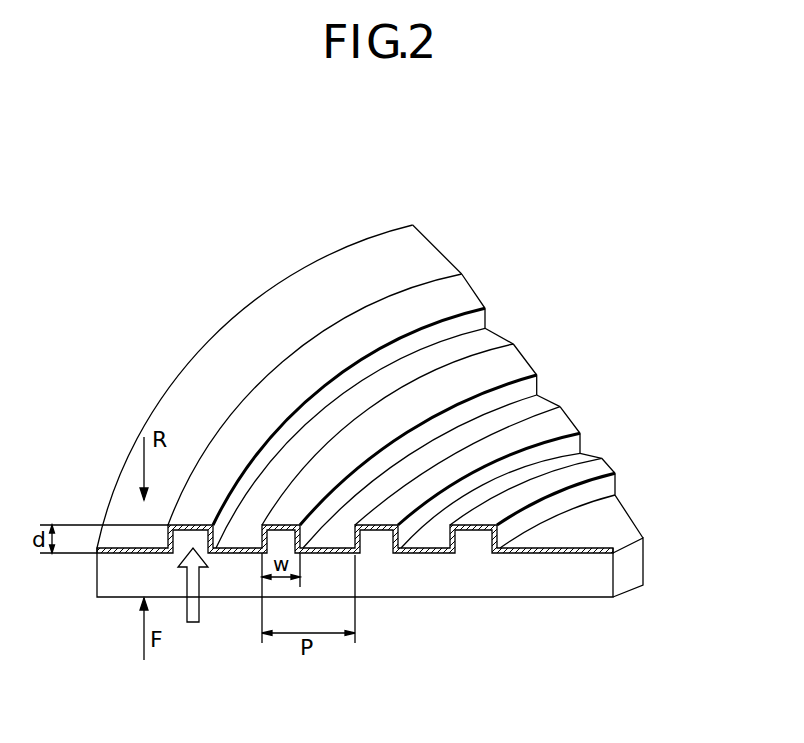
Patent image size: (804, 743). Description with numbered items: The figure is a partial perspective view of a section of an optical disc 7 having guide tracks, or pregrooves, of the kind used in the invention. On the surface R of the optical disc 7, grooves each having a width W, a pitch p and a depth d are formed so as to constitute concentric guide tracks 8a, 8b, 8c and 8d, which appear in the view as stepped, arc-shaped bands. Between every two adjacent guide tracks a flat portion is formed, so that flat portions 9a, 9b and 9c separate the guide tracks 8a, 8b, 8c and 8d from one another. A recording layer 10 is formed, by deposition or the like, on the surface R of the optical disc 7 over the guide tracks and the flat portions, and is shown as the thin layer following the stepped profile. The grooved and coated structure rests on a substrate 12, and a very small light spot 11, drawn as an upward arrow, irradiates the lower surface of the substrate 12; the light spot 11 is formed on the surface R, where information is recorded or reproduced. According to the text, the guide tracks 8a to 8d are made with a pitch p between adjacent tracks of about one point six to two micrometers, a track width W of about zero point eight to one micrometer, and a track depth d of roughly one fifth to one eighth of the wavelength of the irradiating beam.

The optical disc 7 is at (352, 243).
The guide track 8a is at (470, 308).
The flat portion 9a is at (490, 343).
The guide track 8b is at (518, 368).
The flat portion 9b is at (535, 408).
The guide track 8c is at (565, 427).
The flat portion 9c is at (580, 458).
The guide track 8d is at (590, 473).
The recording layer 10 is at (110, 553).
The light spot 11 is at (199, 612).
The substrate 12 is at (483, 588).